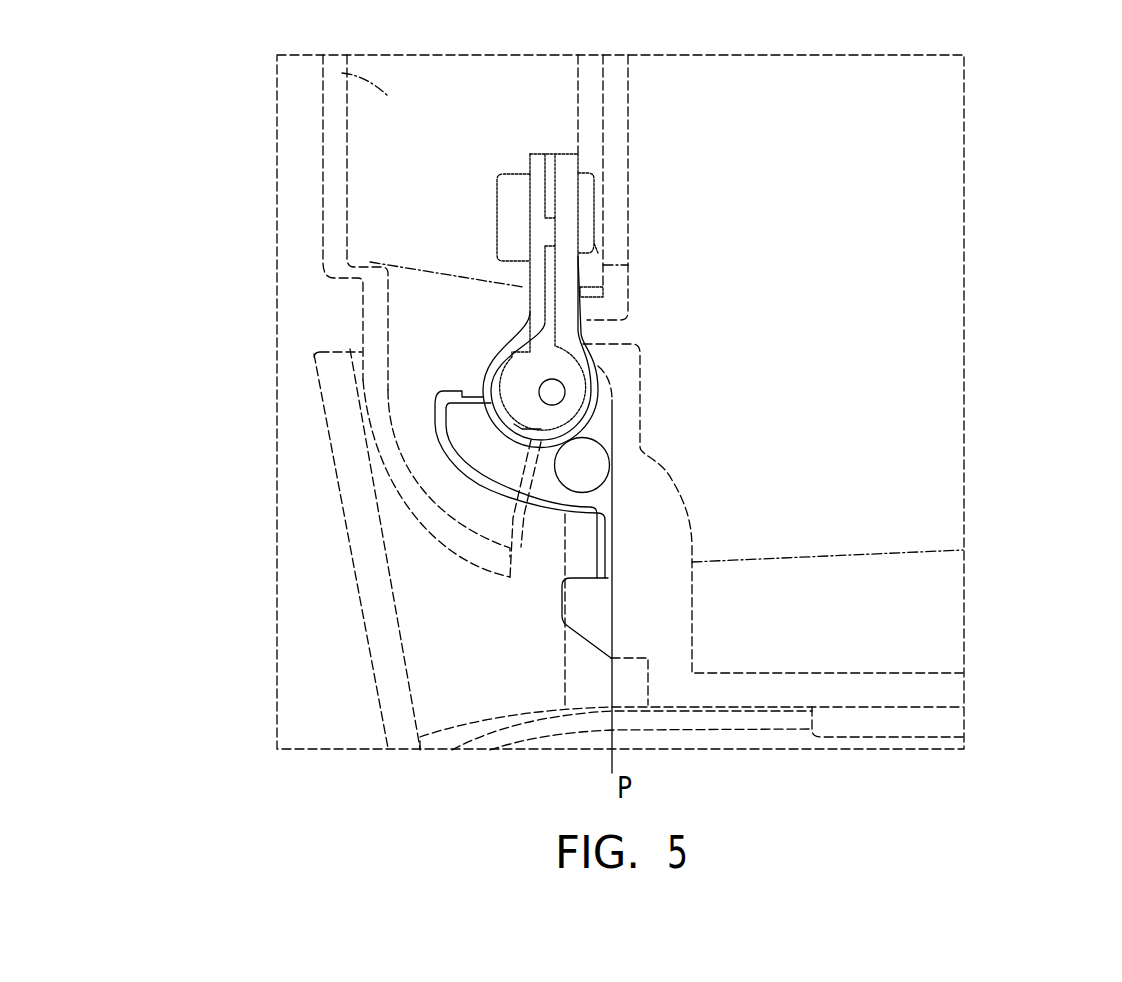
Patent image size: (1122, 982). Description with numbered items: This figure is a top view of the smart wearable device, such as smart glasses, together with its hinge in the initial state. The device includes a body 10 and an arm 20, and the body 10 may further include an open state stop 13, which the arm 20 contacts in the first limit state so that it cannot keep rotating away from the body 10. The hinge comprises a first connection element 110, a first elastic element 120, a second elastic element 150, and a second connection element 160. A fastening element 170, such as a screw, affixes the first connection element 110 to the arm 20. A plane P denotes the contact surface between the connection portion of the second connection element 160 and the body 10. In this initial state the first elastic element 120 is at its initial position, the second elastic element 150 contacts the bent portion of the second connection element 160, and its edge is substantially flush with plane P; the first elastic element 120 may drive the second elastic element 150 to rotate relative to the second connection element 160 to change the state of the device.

The body 10 is at (947, 692).
The open state stop 13 is at (312, 353).
The arm 20 is at (342, 73).
The first connection element 110 is at (530, 160).
The first elastic element 120 is at (552, 306).
The second elastic element 150 is at (583, 465).
The second connection element 160 is at (490, 483).
The fastening element 170 is at (517, 232).